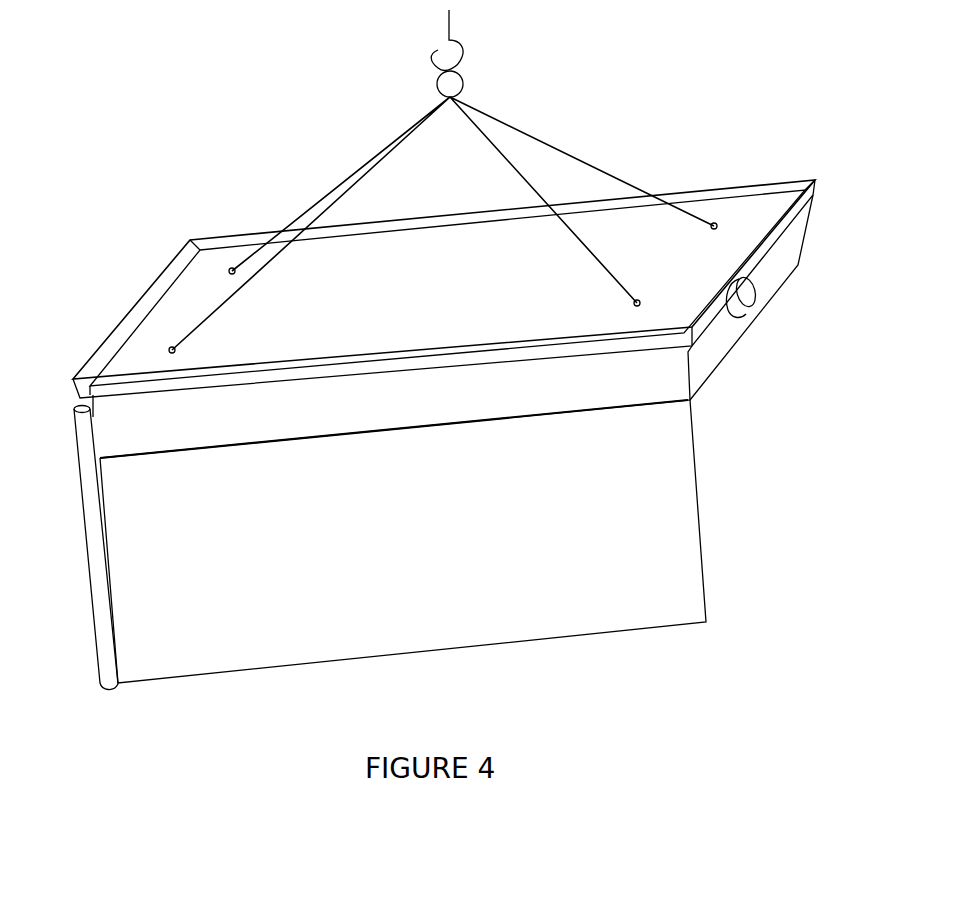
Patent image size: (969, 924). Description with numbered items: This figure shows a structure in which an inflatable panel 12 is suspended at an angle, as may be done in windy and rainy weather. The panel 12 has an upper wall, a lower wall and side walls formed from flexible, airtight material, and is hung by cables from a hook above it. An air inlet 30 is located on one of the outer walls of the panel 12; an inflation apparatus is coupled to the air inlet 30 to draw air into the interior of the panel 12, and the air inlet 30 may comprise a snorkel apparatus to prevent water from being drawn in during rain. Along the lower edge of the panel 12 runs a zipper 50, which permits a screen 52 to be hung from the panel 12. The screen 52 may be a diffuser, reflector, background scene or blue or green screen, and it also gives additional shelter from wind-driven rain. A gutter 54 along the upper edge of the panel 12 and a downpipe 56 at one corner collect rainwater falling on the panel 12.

The inflatable panel 12 is at (798, 263).
The air inlet 30 is at (758, 310).
The zipper 50 is at (643, 408).
The screen 52 is at (700, 548).
The gutter 54 is at (740, 182).
The downpipe 56 is at (93, 622).